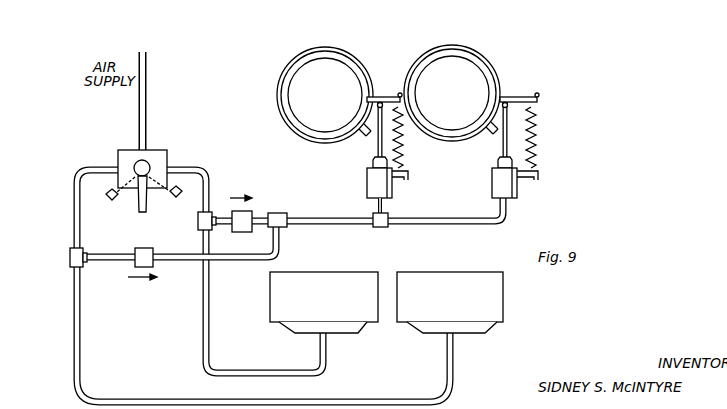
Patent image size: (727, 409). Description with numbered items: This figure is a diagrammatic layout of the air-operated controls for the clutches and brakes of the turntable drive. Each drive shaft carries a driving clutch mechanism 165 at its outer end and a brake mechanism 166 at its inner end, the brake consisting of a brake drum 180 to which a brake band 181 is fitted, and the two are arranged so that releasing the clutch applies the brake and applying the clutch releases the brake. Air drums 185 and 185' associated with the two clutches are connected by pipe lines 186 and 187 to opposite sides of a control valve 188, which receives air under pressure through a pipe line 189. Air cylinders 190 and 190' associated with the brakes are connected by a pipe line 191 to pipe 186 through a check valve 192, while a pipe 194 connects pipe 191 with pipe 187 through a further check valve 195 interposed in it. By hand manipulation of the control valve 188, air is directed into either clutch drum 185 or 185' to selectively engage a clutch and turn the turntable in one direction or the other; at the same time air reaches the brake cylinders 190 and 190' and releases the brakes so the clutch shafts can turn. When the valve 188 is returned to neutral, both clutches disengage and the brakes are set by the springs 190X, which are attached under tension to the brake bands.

The driving clutch mechanism 165 is at (343, 342).
The brake mechanism 166 is at (290, 62).
The brake drum 180 is at (290, 118).
The brake band 181 is at (281, 92).
The air drum 185 is at (310, 309).
The air drum 185' is at (452, 315).
The pipe line 186 is at (200, 168).
The pipe line 187 is at (75, 317).
The control valve 188 is at (153, 148).
The pipe line 189 is at (147, 87).
The air cylinder 190 is at (408, 160).
The air cylinder 190' is at (538, 146).
The spring 190X is at (405, 153).
The pipe line 191 is at (438, 222).
The check valve 192 is at (255, 213).
The pipe 194 is at (287, 242).
The check valve 195 is at (142, 247).